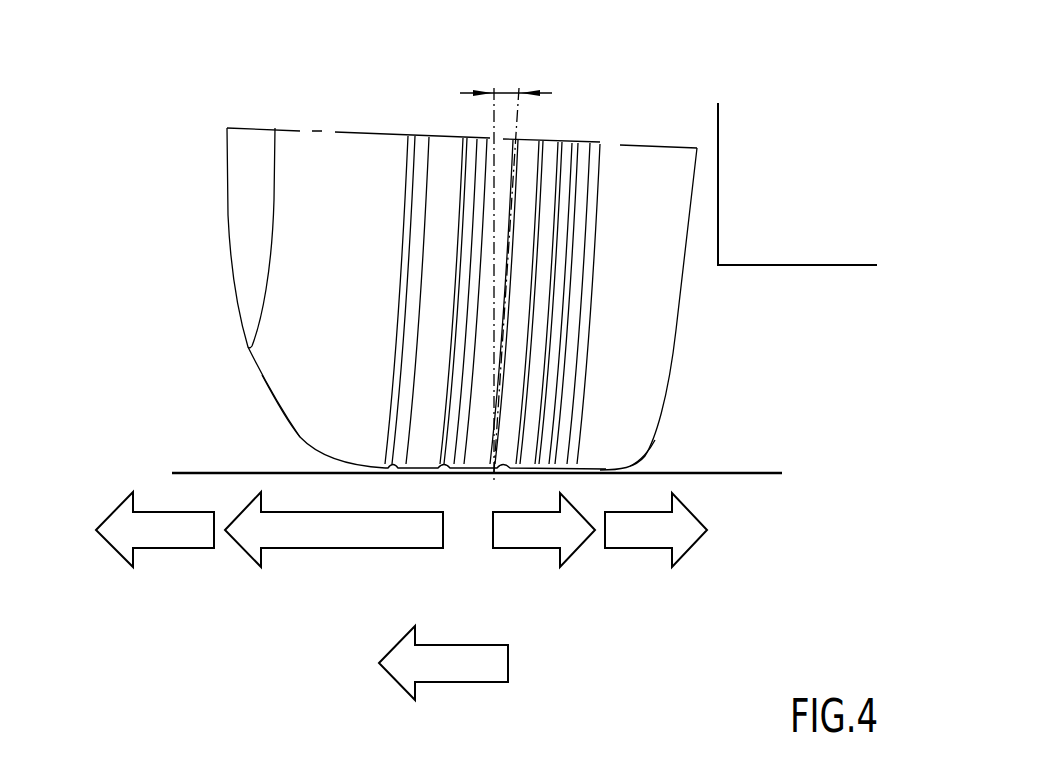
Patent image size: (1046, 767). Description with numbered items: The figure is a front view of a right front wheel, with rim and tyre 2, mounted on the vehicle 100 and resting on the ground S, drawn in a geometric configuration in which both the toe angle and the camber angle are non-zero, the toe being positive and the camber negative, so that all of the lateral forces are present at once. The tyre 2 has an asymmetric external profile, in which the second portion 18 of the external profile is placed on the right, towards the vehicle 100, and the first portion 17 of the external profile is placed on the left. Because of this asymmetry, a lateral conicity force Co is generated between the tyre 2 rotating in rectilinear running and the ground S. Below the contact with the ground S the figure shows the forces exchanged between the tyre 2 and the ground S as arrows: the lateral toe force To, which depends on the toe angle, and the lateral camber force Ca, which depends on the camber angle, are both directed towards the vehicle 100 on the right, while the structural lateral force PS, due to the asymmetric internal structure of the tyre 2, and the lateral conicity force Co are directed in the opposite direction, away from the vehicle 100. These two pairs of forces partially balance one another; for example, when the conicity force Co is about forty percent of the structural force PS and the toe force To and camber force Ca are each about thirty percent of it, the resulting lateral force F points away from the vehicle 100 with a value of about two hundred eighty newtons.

The tyre 2 is at (140, 169).
The first portion of external profile 17 is at (302, 452).
The second portion of external profile 18 is at (648, 463).
The vehicle 100 is at (775, 267).
The ground S is at (741, 473).
The lateral conicity force Co is at (172, 548).
The structural lateral force PS is at (352, 548).
The lateral camber force Ca is at (527, 548).
The lateral toe force To is at (638, 548).
The resulting lateral force F is at (453, 682).